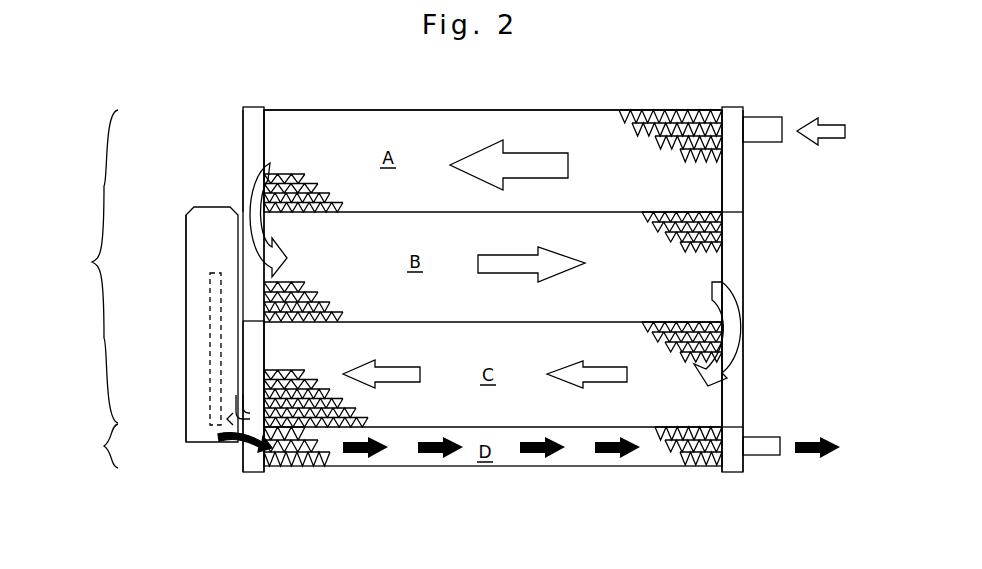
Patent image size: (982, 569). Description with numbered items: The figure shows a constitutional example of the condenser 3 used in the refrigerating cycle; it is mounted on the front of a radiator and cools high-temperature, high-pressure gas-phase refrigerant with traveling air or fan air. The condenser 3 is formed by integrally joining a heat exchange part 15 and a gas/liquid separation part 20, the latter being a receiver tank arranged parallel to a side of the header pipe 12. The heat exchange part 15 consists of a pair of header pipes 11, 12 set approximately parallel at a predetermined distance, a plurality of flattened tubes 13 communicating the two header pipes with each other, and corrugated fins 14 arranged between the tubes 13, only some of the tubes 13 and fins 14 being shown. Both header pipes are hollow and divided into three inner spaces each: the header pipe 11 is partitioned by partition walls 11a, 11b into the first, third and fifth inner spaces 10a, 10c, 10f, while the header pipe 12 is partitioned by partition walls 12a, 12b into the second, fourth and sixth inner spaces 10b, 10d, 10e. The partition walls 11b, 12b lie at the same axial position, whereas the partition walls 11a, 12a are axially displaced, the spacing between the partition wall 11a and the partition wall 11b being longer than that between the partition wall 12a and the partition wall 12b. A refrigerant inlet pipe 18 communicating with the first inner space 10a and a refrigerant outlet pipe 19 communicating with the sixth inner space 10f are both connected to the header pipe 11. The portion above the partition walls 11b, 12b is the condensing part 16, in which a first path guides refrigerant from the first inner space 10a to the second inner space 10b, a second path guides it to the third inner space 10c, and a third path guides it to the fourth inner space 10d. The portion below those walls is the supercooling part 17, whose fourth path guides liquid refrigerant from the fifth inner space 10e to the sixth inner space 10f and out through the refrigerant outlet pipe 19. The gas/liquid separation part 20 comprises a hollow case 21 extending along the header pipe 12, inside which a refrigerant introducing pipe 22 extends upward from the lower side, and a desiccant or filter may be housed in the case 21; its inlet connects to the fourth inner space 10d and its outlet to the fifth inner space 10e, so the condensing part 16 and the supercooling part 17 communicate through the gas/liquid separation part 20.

The condenser 3 is at (537, 88).
The heat exchange part 15 is at (355, 108).
The header pipe 12 is at (258, 107).
The header pipe 11 is at (733, 107).
The refrigerant inlet pipe 18 is at (765, 118).
The refrigerant outlet pipe 19 is at (770, 456).
The first inner space 10a is at (735, 172).
The second inner space 10b is at (252, 152).
The third inner space 10c is at (735, 270).
The fourth inner space 10d is at (250, 383).
The fifth inner space 10e is at (257, 473).
The sixth inner space 10f is at (735, 473).
The partition wall 11a is at (735, 212).
The partition wall 11b is at (735, 427).
The partition wall 12a is at (262, 321).
The partition wall 12b is at (246, 445).
The flattened tubes 13 is at (636, 123).
The corrugated fins 14 is at (668, 148).
The condensing part 16 is at (86, 266).
The supercooling part 17 is at (94, 446).
The gas/liquid separation part 20 is at (187, 208).
The hollow case 21 is at (186, 242).
The refrigerant introducing pipe 22 is at (207, 355).